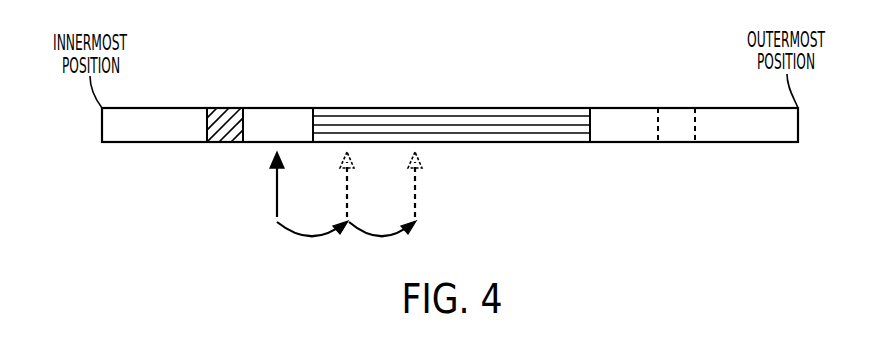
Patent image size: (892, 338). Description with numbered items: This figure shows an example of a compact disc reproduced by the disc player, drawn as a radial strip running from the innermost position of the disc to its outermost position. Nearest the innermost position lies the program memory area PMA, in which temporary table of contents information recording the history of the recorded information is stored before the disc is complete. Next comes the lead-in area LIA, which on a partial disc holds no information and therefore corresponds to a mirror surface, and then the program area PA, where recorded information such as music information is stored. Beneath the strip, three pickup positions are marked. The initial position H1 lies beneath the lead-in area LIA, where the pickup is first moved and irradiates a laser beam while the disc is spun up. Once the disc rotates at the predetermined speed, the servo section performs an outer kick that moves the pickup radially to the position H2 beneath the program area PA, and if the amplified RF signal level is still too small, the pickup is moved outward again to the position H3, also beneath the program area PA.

The initial position H1 is at (274, 187).
The position beneath the program area H2 is at (345, 187).
The position beneath the program area H3 is at (413, 187).
The program memory area PMA is at (225, 108).
The lead-in area LIA is at (278, 108).
The program area PA is at (442, 108).